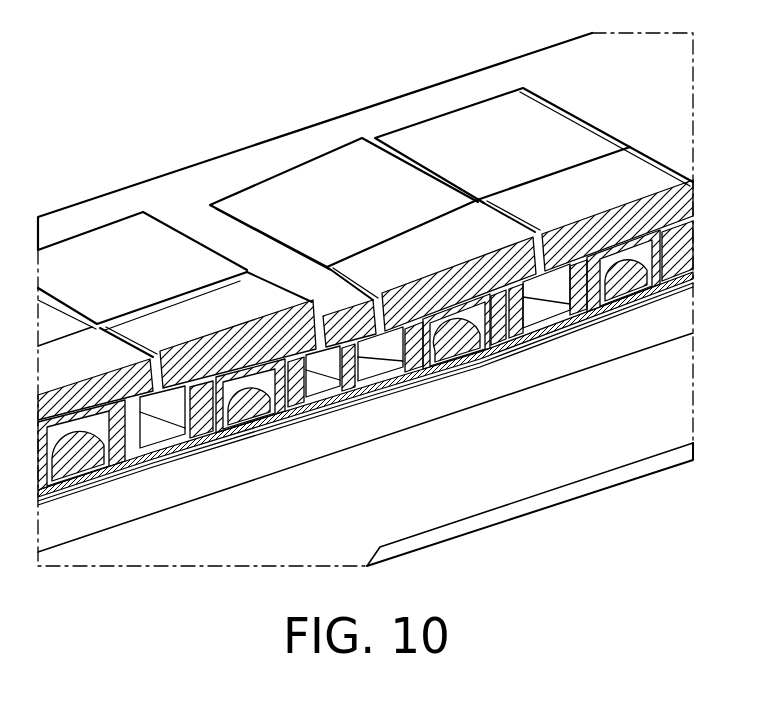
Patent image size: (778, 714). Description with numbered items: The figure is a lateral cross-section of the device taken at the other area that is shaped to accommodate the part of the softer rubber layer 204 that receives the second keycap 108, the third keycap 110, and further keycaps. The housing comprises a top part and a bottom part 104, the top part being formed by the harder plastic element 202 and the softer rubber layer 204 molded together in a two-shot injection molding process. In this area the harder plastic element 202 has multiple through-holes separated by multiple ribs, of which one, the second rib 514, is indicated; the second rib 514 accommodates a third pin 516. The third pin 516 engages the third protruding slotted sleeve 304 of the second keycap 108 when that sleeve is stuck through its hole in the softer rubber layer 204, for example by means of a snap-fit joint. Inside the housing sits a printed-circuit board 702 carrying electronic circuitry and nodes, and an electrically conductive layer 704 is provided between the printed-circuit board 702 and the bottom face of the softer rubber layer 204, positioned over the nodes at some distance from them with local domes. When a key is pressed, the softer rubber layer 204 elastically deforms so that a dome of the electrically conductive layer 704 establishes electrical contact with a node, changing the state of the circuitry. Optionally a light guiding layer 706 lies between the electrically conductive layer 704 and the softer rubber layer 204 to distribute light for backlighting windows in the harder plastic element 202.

The bottom part 104 is at (613, 452).
The second keycap 108 is at (390, 263).
The third keycap 110 is at (517, 130).
The harder plastic element 202 is at (185, 200).
The softer rubber layer 204 is at (537, 307).
The third protruding slotted sleeve 304 is at (498, 293).
The second rib 514 is at (455, 368).
The third pin 516 is at (497, 283).
The printed-circuit board 702 is at (87, 517).
The electrically conductive layer 704 is at (262, 443).
The light guiding layer 706 is at (377, 392).